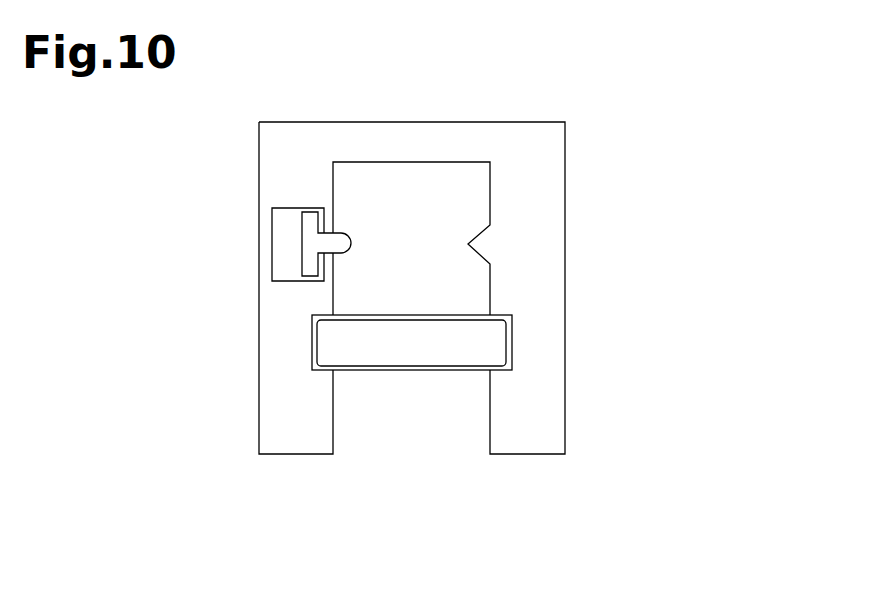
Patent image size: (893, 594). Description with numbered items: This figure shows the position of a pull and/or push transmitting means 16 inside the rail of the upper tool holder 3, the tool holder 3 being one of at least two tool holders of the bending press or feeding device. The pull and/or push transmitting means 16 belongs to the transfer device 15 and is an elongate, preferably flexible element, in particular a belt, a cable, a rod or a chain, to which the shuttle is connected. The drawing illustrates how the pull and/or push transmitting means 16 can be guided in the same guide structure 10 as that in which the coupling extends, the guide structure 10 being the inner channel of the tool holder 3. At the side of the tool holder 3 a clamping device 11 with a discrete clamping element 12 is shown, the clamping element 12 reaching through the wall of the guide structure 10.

The upper tool holder 3 is at (565, 218).
The guide structure 10 is at (489, 314).
The clamping device 11 is at (292, 206).
The clamping element 12 is at (349, 236).
The transfer device 15 is at (397, 379).
The pull and/or push transmitting means 16 is at (493, 347).